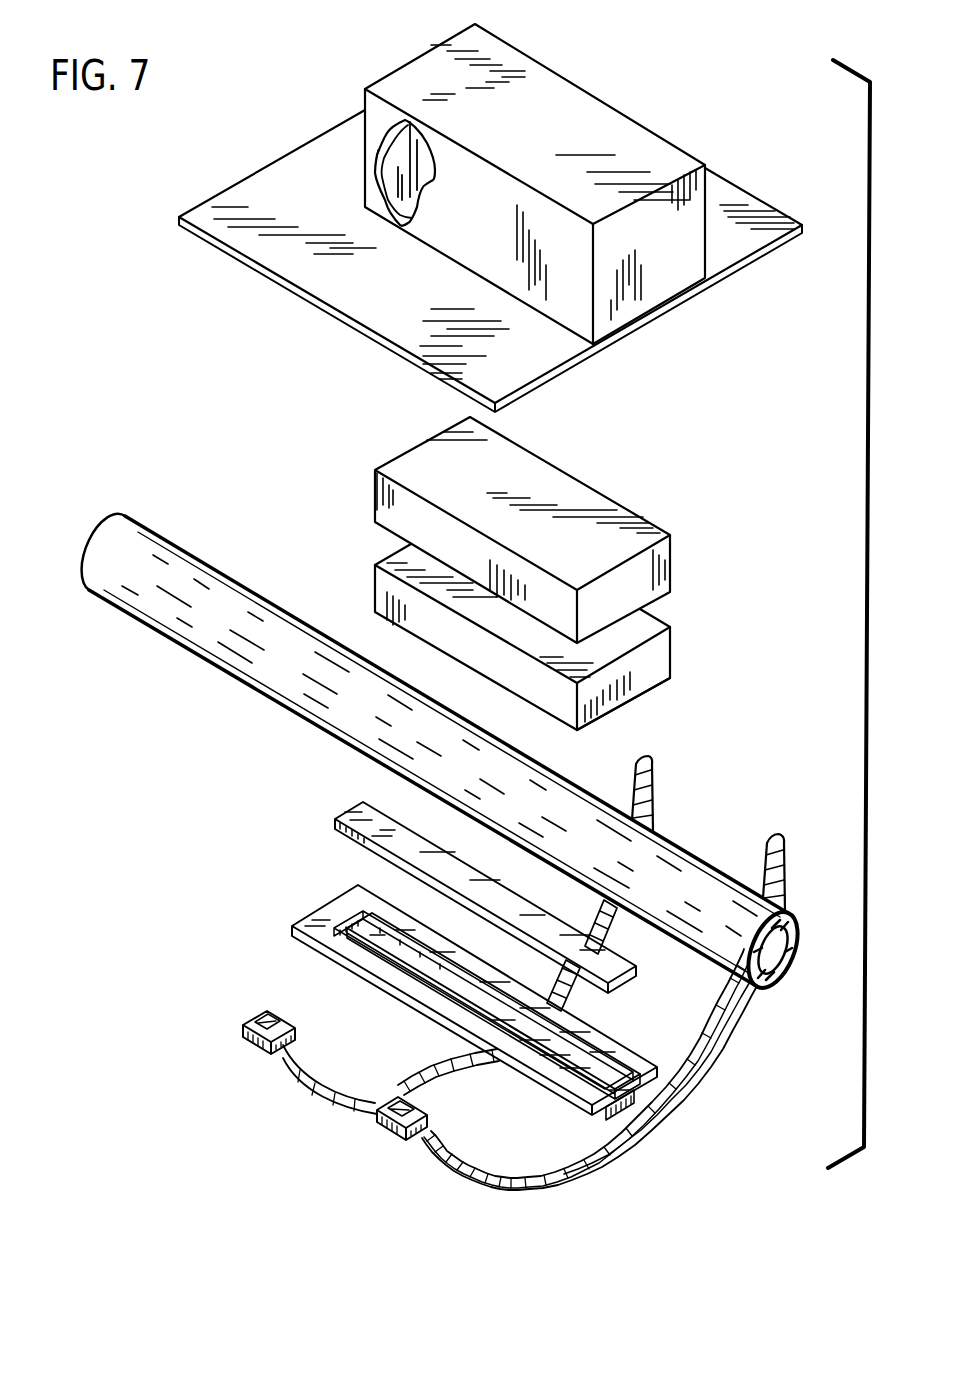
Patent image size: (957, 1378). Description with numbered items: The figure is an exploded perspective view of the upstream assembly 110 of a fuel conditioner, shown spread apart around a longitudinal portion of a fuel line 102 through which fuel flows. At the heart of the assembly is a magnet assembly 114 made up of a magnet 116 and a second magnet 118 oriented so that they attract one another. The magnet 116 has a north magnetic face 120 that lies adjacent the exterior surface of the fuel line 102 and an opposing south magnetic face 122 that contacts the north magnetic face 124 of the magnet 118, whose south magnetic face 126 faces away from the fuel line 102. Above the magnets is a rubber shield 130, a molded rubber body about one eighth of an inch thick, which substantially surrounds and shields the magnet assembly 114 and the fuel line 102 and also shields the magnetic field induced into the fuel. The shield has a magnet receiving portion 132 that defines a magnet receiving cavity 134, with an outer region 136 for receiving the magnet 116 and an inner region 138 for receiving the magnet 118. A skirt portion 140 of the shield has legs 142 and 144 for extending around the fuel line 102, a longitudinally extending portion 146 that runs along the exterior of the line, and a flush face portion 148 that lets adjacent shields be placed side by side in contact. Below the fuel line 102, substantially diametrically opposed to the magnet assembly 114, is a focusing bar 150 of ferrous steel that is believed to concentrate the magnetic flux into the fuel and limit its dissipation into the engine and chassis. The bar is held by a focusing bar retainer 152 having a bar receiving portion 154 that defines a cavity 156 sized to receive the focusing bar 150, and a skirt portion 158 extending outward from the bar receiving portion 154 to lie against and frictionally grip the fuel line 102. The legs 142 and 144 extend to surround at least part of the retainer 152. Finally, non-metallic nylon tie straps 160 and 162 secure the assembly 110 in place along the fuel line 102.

The fuel line 102 is at (145, 587).
The upstream assembly 110 is at (142, 1148).
The magnet assembly 114 is at (312, 492).
The magnet 116 is at (390, 590).
The second magnet 118 is at (428, 468).
The north magnetic face 120 is at (633, 697).
The south magnetic face 122 is at (620, 643).
The north magnetic face 124 is at (650, 608).
The south magnetic face 126 is at (587, 507).
The rubber shield 130 is at (224, 159).
The magnet receiving portion 132 is at (576, 118).
The magnet receiving cavity 134 is at (411, 223).
The outer region 136 is at (365, 206).
The inner region 138 is at (376, 147).
The skirt portion 140 is at (226, 234).
The leg 142 is at (517, 356).
The leg 144 is at (730, 245).
The longitudinally extending portion 146 is at (250, 189).
The flush face portion 148 is at (660, 266).
The focusing bar 150 is at (388, 833).
The focusing bar retainer 152 is at (328, 917).
The bar receiving portion 154 is at (610, 1112).
The cavity 156 is at (427, 957).
The skirt portion 158 is at (397, 968).
The nylon tie strap 160 is at (293, 1076).
The nylon tie strap 162 is at (460, 1167).